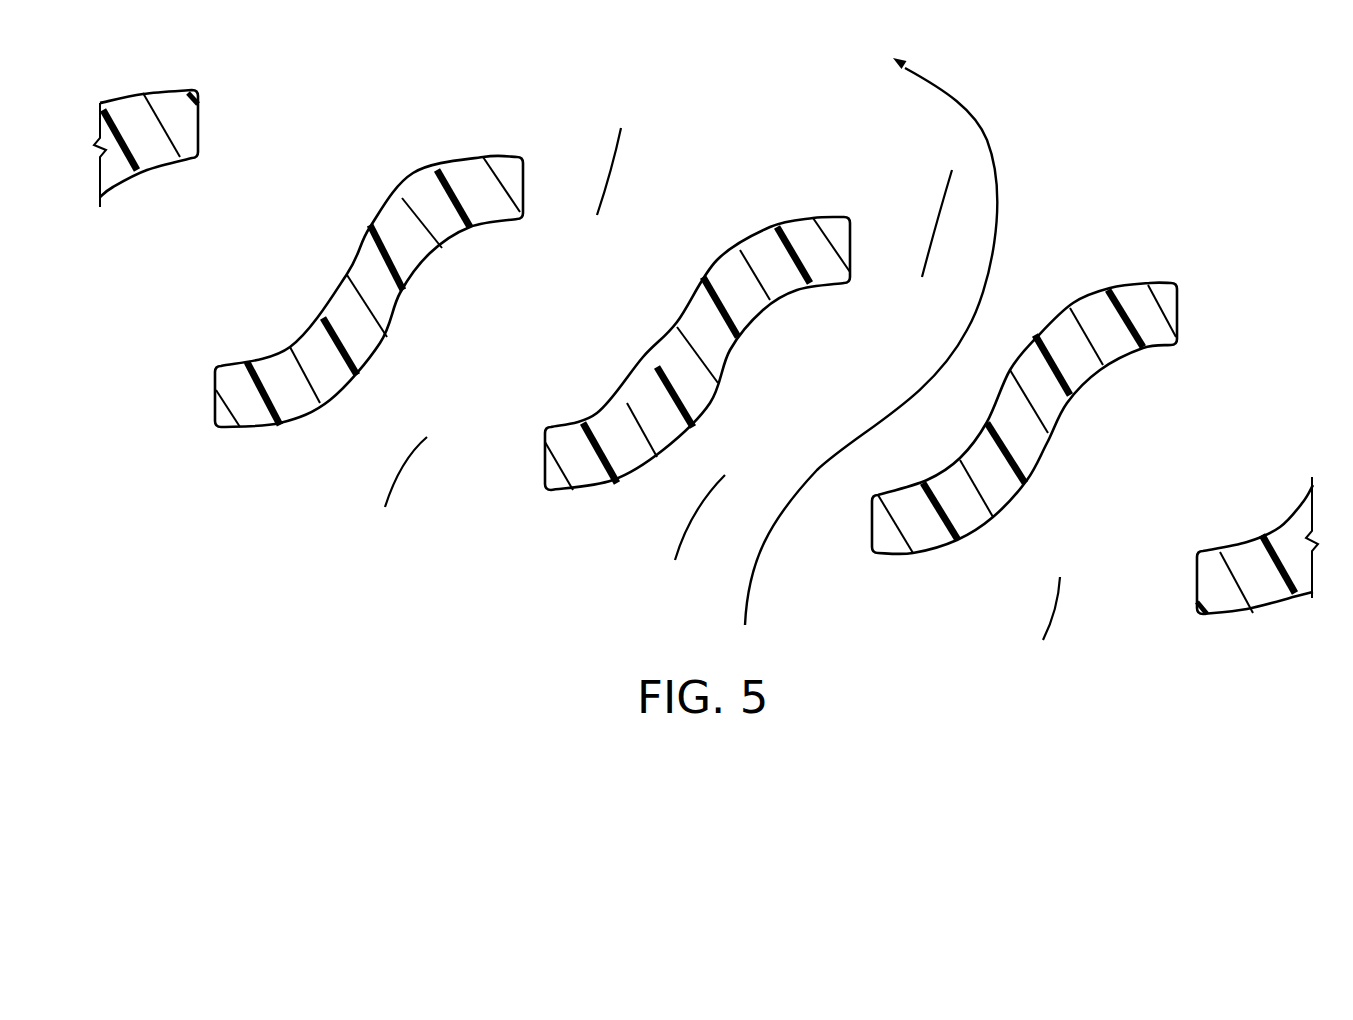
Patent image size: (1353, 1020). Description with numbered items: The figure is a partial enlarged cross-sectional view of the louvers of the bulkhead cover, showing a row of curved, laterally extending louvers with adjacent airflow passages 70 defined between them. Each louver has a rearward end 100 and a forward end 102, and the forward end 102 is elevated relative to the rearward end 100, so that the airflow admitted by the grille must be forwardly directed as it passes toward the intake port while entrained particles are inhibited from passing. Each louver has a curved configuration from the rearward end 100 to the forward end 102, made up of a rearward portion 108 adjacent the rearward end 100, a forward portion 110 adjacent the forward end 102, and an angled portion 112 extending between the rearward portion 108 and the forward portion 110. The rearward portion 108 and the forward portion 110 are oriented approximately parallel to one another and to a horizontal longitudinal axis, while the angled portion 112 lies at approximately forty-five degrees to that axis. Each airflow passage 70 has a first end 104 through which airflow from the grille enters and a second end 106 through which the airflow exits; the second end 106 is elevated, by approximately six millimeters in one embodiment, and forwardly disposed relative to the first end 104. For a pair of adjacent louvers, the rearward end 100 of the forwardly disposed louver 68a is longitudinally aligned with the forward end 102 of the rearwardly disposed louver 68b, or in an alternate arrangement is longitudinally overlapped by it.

The forwardly disposed louver 68a is at (1058, 312).
The rearwardly disposed louver 68b is at (718, 262).
The airflow passage 70 is at (565, 336).
The rearward end 100 is at (215, 410).
The forward end 102 is at (527, 170).
The first end 104 is at (709, 556).
The second end 106 is at (784, 180).
The rearward portion 108 is at (583, 468).
The forward portion 110 is at (807, 232).
The angled portion 112 is at (720, 350).